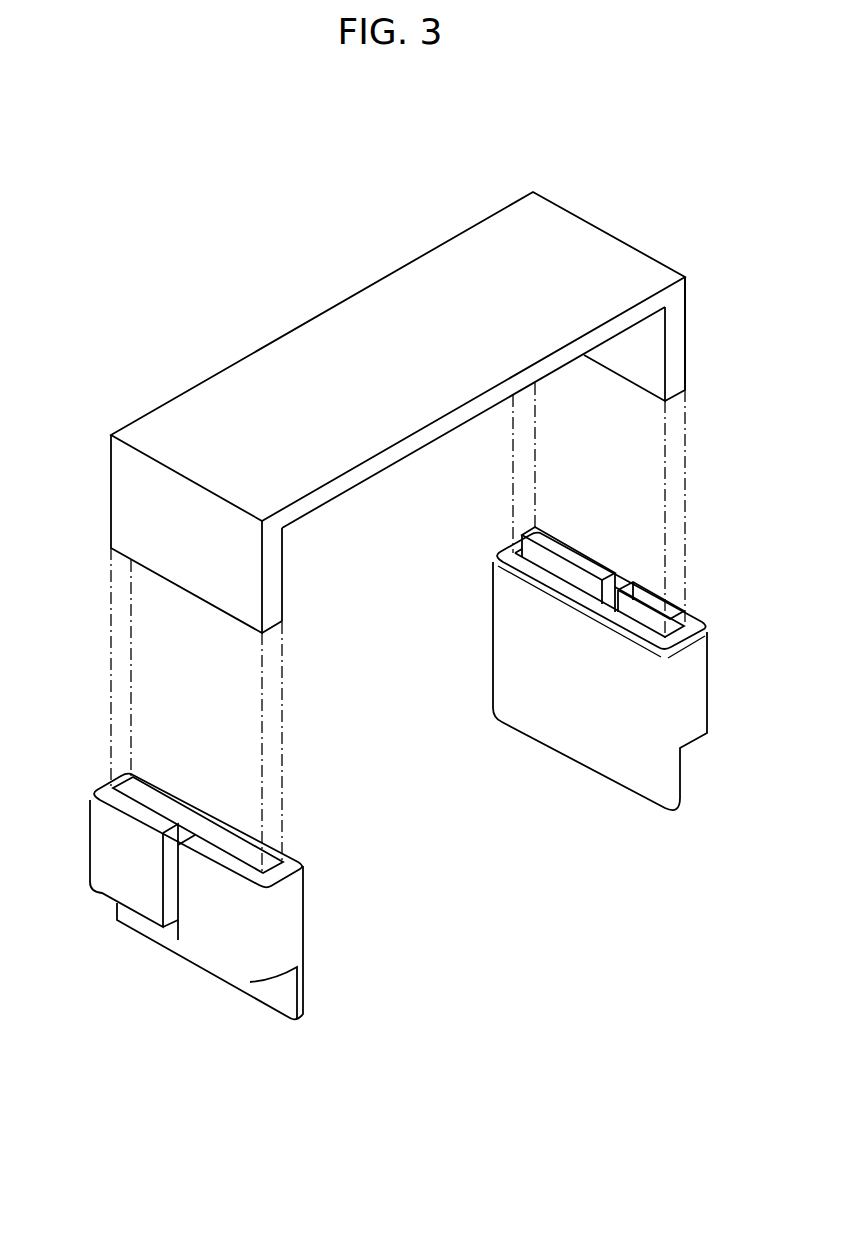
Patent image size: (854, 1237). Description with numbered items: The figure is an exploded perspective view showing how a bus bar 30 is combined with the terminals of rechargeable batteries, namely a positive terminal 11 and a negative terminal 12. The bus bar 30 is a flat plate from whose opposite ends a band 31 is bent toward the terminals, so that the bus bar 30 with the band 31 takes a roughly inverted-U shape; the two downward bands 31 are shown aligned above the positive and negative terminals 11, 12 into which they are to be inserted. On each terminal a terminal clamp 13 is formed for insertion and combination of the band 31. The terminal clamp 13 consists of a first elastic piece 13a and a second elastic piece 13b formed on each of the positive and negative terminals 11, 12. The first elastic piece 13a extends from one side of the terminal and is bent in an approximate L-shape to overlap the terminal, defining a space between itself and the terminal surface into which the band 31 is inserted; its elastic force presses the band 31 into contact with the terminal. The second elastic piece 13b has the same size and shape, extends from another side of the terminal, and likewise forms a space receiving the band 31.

The bus bar 30 is at (229, 241).
The band 31 is at (215, 595).
The positive terminal 11 is at (306, 995).
The negative terminal 12 is at (632, 776).
The terminal clamp 13 is at (373, 751).
The first elastic piece 13a is at (143, 905).
The second elastic piece 13b is at (208, 940).